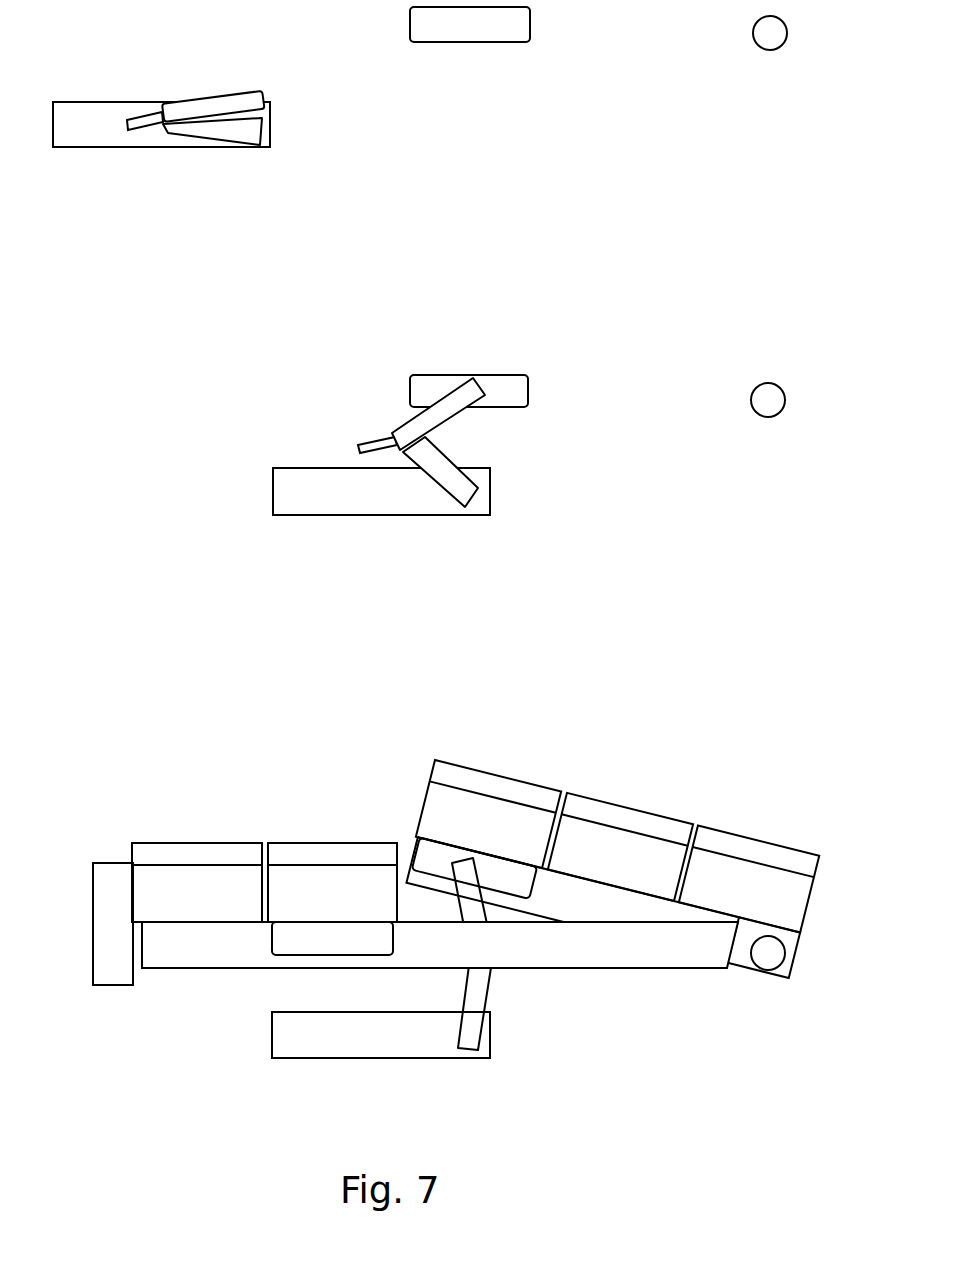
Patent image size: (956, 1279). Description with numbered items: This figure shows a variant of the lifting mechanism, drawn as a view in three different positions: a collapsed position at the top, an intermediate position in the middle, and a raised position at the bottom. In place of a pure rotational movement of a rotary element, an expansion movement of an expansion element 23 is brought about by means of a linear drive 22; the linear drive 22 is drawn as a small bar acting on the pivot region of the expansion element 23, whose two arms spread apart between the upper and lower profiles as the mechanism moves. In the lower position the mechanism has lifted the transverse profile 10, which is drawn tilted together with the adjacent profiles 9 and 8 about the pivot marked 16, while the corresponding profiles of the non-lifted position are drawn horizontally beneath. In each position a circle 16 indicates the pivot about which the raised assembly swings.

The first segment 8 is at (730, 882).
The second segment 9 is at (590, 850).
The transverse profile 10 is at (473, 818).
The pivot axis 16 is at (770, 33).
The linear drive 22 is at (367, 442).
The expansion element 23 is at (492, 440).